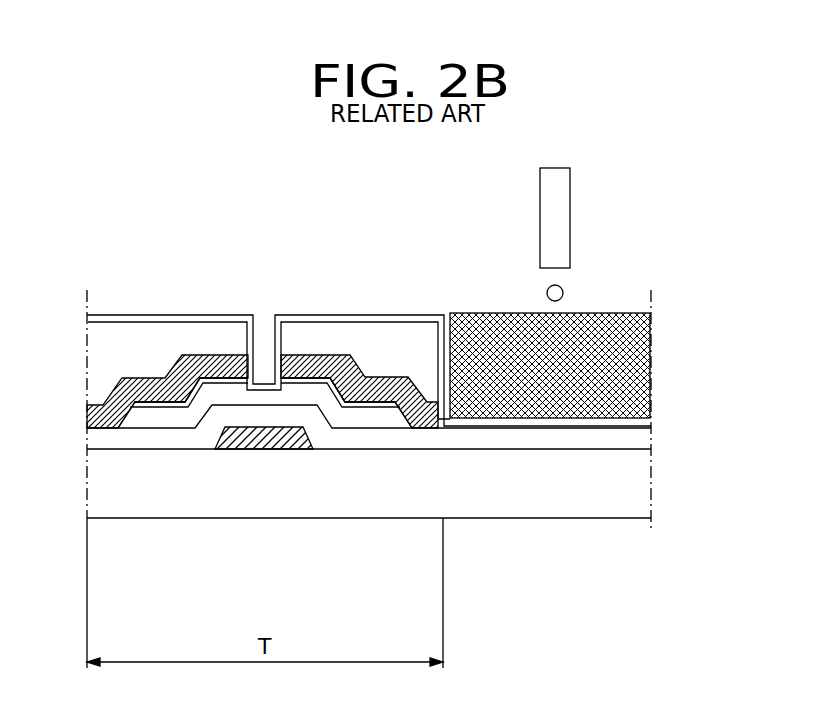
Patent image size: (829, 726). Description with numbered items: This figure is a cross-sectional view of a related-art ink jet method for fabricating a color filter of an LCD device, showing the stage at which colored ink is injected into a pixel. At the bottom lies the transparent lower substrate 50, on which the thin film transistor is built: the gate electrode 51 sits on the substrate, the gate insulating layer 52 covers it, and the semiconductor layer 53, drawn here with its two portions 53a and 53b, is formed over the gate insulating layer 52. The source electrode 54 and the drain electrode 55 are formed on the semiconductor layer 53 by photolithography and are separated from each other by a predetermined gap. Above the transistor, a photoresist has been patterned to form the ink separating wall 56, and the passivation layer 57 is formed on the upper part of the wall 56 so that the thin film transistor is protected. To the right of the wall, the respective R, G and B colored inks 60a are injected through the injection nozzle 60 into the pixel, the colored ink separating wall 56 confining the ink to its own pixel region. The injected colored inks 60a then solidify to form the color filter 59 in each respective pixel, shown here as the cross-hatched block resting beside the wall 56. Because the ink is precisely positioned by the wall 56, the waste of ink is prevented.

The transparent lower substrate 50 is at (645, 483).
The gate electrode 51 is at (283, 449).
The gate insulating layer 52 is at (645, 436).
The semiconductor layer 53 is at (258, 571).
The active layer 53a is at (173, 407).
The ohmic contact layer 53b is at (236, 400).
The source electrode 54 is at (143, 398).
The drain electrode 55 is at (372, 400).
The ink separating wall 56 is at (403, 330).
The passivation layer 57 is at (333, 320).
The color filter 59 is at (652, 373).
The injection nozzle 60 is at (565, 213).
The colored inks 60a is at (563, 293).